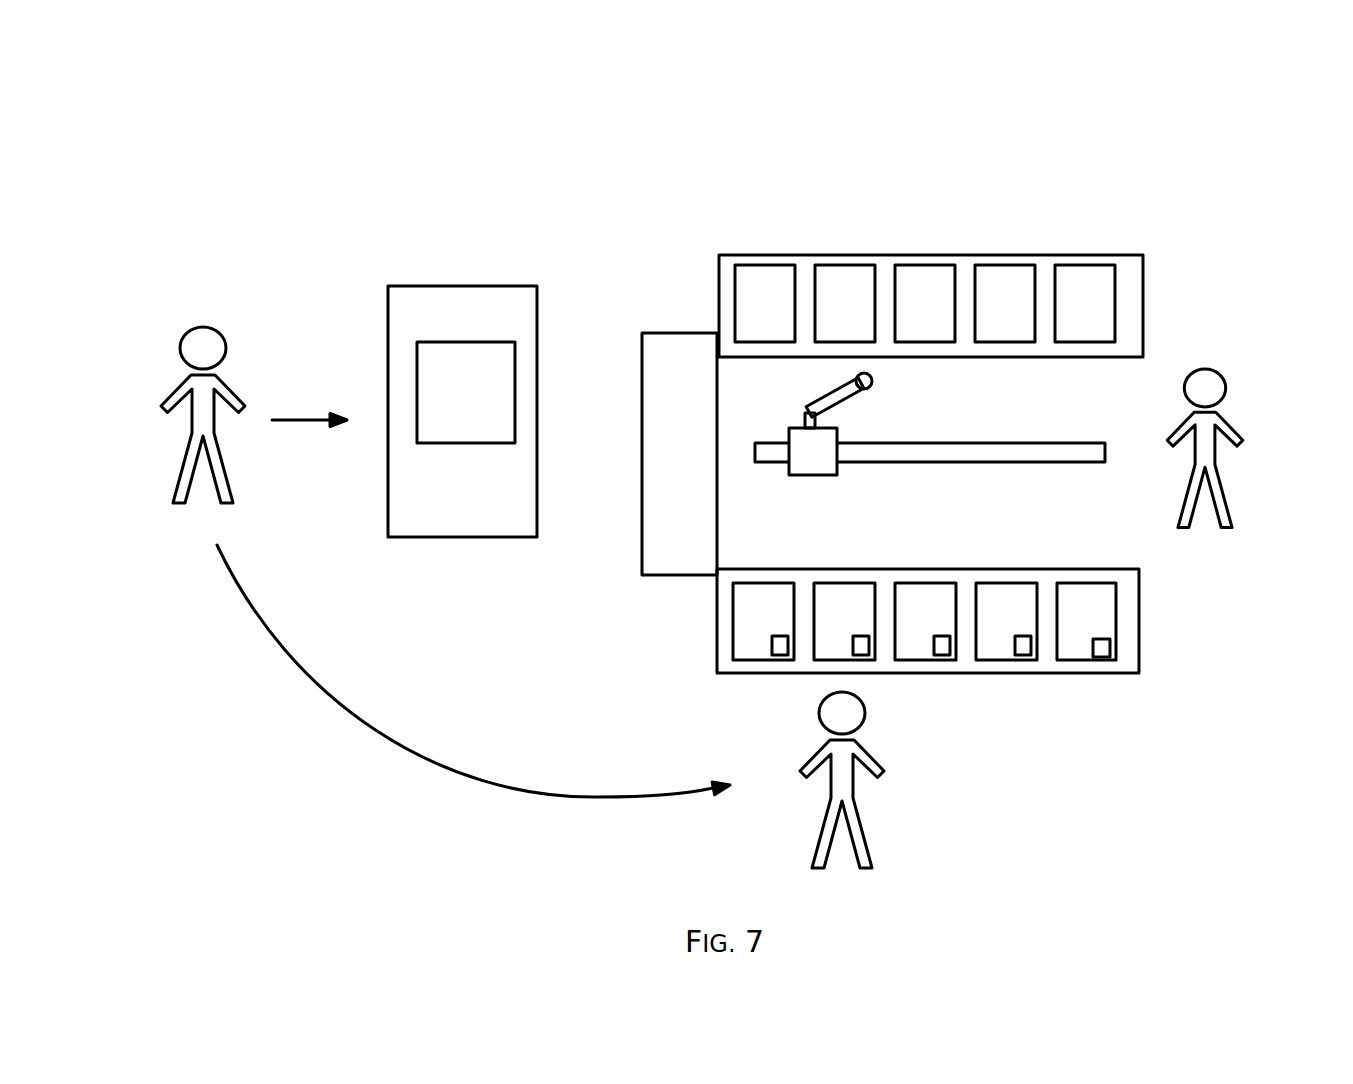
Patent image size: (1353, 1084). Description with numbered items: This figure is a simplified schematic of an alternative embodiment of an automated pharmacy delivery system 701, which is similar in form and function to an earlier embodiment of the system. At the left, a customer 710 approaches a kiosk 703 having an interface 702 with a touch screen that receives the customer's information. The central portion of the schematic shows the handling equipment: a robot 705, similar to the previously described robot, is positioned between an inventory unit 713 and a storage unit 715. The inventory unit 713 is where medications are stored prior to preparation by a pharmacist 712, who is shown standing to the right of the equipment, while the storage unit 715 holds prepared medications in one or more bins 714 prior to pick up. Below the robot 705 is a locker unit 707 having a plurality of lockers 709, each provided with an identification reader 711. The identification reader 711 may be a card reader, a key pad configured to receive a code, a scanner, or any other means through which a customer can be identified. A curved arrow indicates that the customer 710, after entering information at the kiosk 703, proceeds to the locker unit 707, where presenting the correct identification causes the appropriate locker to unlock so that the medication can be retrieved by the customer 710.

The automated pharmacy delivery system 701 is at (262, 94).
The interface 702 is at (460, 342).
The kiosk 703 is at (337, 246).
The robot 705 is at (882, 496).
The locker unit 707 is at (987, 673).
The lockers 709 is at (1116, 614).
The customer 710 is at (196, 328).
The identification reader 711 is at (1110, 645).
The pharmacist 712 is at (1210, 368).
The inventory unit 713 is at (603, 647).
The bins 714 is at (737, 295).
The storage unit 715 is at (884, 250).